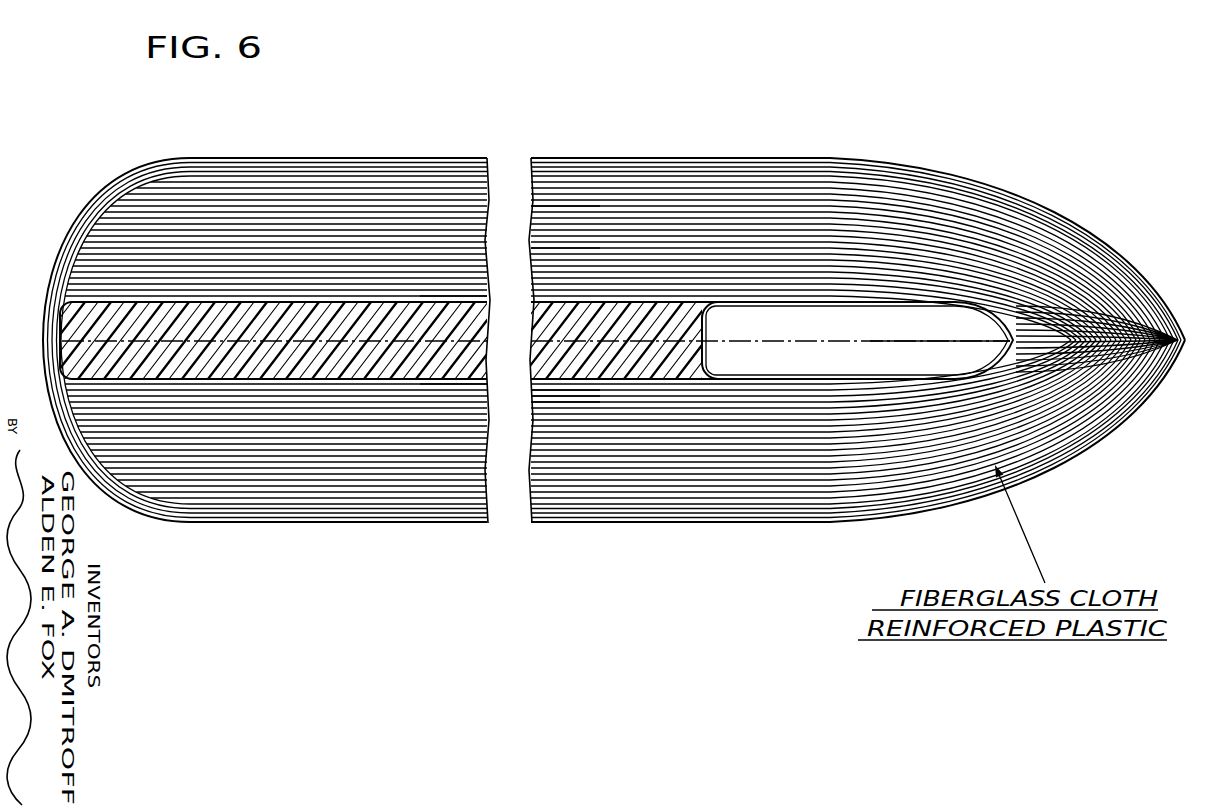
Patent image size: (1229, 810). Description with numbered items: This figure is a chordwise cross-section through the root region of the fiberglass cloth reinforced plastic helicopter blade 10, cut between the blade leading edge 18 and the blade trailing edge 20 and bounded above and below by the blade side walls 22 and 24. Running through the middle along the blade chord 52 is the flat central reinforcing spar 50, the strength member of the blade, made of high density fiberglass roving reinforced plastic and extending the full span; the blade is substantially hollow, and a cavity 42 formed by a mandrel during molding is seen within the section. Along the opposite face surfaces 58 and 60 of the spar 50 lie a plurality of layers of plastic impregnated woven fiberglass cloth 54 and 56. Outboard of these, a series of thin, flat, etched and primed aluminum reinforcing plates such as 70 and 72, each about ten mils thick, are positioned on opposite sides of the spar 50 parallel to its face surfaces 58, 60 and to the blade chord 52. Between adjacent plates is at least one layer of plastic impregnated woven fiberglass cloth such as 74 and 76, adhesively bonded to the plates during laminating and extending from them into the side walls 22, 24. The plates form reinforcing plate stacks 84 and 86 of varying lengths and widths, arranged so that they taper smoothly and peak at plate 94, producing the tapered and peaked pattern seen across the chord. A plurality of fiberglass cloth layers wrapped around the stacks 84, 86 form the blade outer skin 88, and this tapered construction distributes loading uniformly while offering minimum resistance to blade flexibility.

The helicopter blade 10 is at (767, 139).
The blade leading edge 18 is at (43, 340).
The blade trailing edge 20 is at (1187, 340).
The blade side wall 22 is at (625, 168).
The blade side wall 24 is at (618, 510).
The cavity 42 is at (838, 352).
The central reinforcing spar 50 is at (700, 340).
The blade chord 52 is at (893, 343).
The layers of plastic impregnated woven fiberglass cloth 54 is at (560, 302).
The layers of plastic impregnated woven fiberglass cloth 56 is at (582, 392).
The face surface of spar 58 is at (462, 306).
The face surface of spar 60 is at (468, 383).
The reinforcing plate 70 is at (543, 288).
The reinforcing plate 72 is at (578, 397).
The layer of plastic impregnated woven fiberglass cloth 74 is at (560, 300).
The layer of plastic impregnated woven fiberglass cloth 76 is at (562, 404).
The reinforcing plate stack 84 is at (368, 205).
The reinforcing plate stack 86 is at (362, 490).
The blade outer skin 88 is at (815, 517).
The plate 94 is at (921, 186).